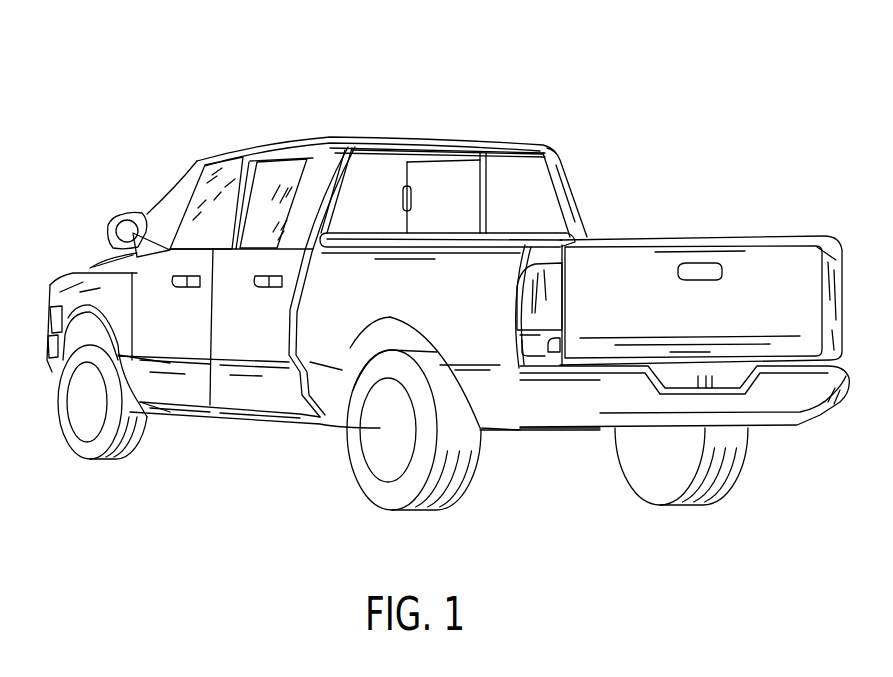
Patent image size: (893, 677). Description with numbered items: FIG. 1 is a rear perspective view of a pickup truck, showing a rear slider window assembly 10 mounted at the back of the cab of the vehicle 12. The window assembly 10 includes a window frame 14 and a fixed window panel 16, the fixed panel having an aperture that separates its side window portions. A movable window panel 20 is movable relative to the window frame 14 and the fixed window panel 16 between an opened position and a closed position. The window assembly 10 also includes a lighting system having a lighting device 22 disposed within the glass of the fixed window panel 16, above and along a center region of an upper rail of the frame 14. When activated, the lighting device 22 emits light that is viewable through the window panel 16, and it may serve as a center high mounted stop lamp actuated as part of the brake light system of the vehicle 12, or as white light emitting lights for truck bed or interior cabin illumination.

The rear slider window assembly 10 is at (517, 200).
The vehicle 12 is at (273, 93).
The window frame 14 is at (355, 252).
The fixed window panel 16 is at (387, 170).
The movable window panel 20 is at (467, 180).
The lighting device 22 is at (423, 157).